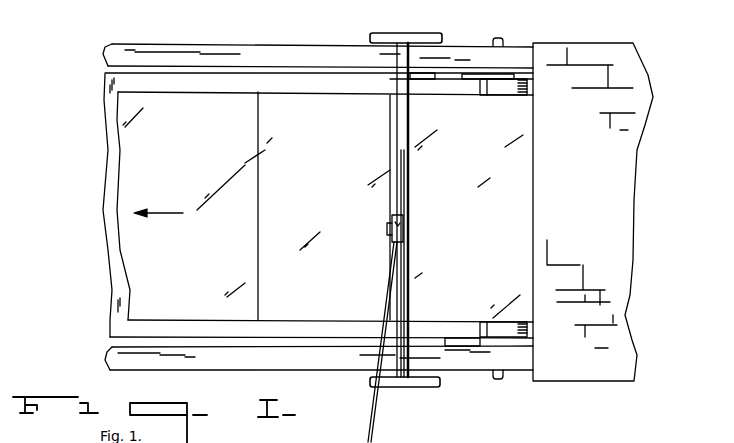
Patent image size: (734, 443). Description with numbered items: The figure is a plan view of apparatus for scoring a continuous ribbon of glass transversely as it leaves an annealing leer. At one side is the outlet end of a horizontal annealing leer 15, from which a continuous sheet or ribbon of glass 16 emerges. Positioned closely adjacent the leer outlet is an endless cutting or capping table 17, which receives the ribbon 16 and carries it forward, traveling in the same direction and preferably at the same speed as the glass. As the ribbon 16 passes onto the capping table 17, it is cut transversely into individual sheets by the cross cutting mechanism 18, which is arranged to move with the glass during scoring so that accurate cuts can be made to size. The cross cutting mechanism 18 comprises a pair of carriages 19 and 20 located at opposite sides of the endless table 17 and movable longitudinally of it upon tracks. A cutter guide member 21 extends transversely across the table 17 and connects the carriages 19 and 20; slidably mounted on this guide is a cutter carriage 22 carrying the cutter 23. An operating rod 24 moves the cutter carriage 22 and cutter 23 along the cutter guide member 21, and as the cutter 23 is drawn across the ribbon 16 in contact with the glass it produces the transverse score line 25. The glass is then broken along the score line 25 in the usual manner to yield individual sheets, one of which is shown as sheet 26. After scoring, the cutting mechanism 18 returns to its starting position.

The outlet end of annealing leer 15 is at (584, 382).
The continuous sheet or ribbon of glass 16 is at (325, 313).
The endless cutting or capping table 17 is at (241, 332).
The cross cutting mechanism 18 is at (415, 171).
The carriage 19 is at (440, 33).
The carriage 20 is at (392, 388).
The cutter guide member 21 is at (410, 259).
The cutter carriage 22 is at (403, 225).
The cutter 23 is at (388, 229).
The operating rod 24 is at (392, 302).
The score line 25 is at (390, 117).
The individual sheet 26 is at (138, 262).